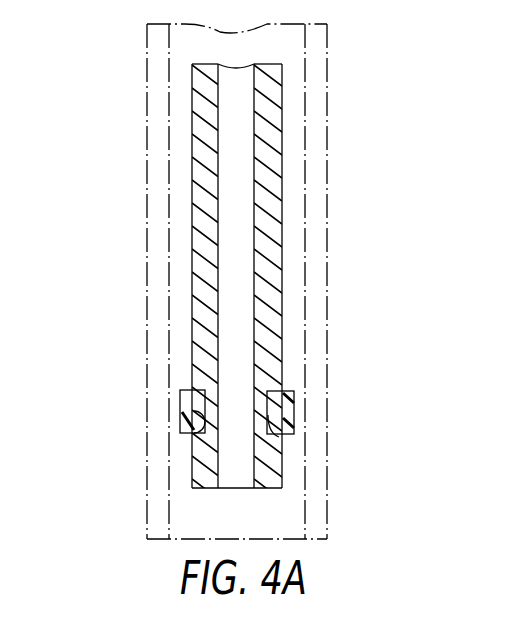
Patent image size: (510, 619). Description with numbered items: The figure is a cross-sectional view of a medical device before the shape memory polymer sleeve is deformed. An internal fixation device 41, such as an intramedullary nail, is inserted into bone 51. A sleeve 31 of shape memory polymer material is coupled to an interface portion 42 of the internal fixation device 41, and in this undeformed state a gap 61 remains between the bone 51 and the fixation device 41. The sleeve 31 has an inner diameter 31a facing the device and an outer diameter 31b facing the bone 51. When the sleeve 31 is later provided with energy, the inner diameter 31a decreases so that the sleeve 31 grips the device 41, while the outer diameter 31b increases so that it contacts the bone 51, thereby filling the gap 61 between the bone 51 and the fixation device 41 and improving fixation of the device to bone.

The internal fixation device 41 is at (278, 128).
The interface portion 42 is at (281, 441).
The bone 51 is at (320, 512).
The sleeve 31 is at (295, 403).
The inner diameter 31a is at (200, 430).
The outer diameter 31b is at (181, 408).
The gap 61 is at (200, 392).